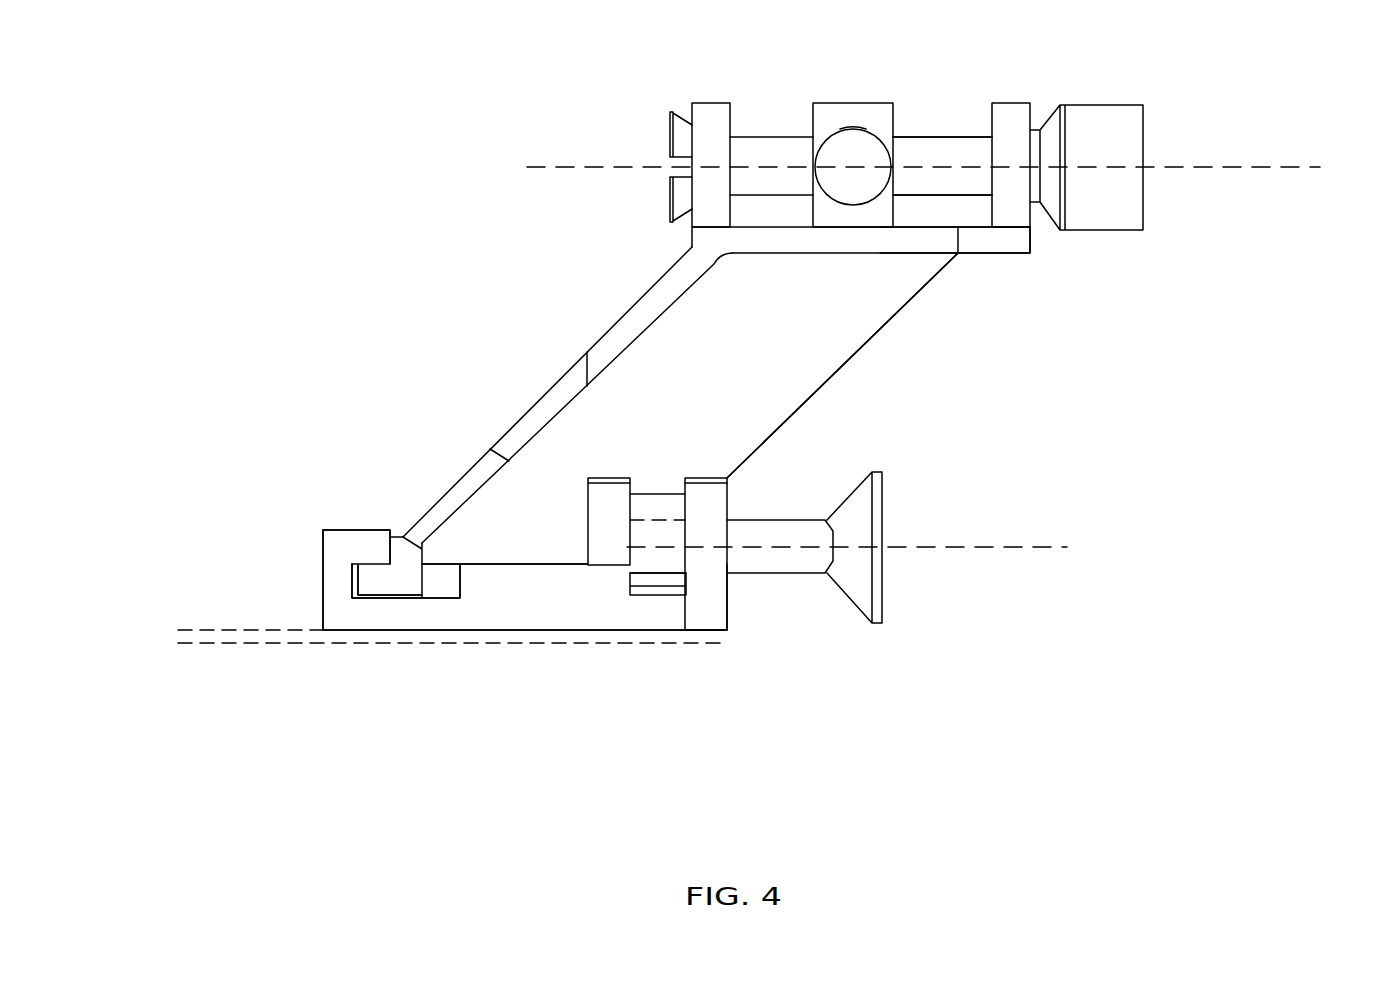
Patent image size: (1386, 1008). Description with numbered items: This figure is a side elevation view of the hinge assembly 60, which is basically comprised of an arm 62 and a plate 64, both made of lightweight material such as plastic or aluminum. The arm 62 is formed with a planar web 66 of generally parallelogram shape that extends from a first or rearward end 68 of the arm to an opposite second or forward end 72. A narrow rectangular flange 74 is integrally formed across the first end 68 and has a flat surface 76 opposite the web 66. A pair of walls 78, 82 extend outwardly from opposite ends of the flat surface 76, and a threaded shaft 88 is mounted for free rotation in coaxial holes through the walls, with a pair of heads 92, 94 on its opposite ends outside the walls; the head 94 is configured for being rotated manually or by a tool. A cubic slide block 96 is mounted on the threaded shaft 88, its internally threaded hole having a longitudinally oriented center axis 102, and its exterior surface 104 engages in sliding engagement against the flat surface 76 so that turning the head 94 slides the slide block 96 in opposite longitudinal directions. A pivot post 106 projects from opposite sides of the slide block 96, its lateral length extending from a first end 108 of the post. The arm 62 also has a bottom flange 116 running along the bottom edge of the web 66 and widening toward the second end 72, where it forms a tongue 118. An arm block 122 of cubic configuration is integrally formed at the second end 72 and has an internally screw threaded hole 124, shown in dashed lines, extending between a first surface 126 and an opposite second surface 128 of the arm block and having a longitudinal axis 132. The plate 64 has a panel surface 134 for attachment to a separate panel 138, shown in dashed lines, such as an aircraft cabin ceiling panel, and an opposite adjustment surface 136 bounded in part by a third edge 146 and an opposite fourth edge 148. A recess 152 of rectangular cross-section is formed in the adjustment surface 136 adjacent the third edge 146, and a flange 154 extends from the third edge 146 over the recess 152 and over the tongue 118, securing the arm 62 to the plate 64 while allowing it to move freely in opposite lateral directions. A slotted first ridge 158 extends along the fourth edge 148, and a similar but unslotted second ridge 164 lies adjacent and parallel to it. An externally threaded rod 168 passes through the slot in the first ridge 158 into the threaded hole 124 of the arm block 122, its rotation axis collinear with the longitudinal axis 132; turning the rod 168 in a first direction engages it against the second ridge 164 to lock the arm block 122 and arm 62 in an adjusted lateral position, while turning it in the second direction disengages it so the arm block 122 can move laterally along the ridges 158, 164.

The hinge assembly 60 is at (985, 358).
The arm 62 is at (835, 371).
The plate 64 is at (502, 620).
The planar web 66 is at (767, 412).
The first end of the arm 68 is at (1032, 240).
The second end of the arm 72 is at (492, 564).
The flange 74 is at (925, 242).
The flat surface 76 is at (913, 224).
The wall 78 is at (711, 120).
The wall 82 is at (1010, 122).
The threaded shaft 88 is at (775, 150).
The head 92 is at (682, 133).
The head 94 is at (1105, 122).
The slide block 96 is at (833, 115).
The center axis 102 is at (1320, 167).
The exterior surface 104 is at (880, 227).
The post 106 is at (856, 128).
The first end of the post 108 is at (868, 152).
The bottom flange 116 is at (500, 436).
The tongue 118 is at (363, 583).
The arm block 122 is at (676, 587).
The internally screw threaded hole 124 is at (655, 587).
The first surface of the arm block 126 is at (685, 553).
The second surface of the arm block 128 is at (628, 537).
The longitudinal axis 132 is at (1053, 547).
The panel surface 134 is at (537, 632).
The adjustment surface 136 is at (483, 562).
The separate panel 138 is at (188, 643).
The third edge of the adjustment surface 146 is at (323, 612).
The fourth edge of the adjustment surface 148 is at (727, 600).
The recess 152 is at (400, 570).
The flange 154 is at (367, 547).
The first ridge 158 is at (712, 503).
The second ridge 164 is at (608, 517).
The rod 168 is at (802, 558).